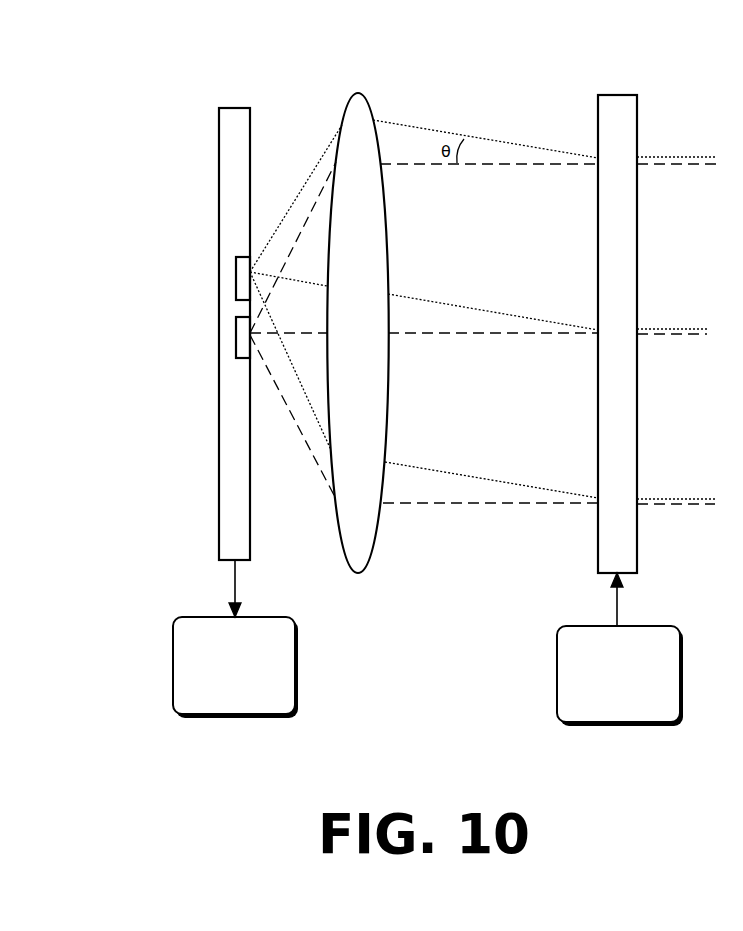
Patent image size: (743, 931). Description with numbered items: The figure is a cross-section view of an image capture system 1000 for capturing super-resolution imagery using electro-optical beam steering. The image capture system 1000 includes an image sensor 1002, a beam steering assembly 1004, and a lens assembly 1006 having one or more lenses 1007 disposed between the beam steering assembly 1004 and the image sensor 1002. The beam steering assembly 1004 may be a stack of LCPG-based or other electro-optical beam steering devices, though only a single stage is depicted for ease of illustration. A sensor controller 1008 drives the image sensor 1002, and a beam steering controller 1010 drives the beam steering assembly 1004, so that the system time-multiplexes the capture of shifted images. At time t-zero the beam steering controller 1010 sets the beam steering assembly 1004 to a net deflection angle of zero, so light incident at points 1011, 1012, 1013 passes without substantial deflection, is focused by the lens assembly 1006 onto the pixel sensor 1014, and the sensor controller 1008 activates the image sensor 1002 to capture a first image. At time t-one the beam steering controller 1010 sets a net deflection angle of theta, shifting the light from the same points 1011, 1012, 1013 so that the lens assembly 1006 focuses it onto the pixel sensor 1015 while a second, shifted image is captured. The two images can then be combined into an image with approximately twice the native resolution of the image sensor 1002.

The image capture system 1000 is at (540, 106).
The image sensor 1002 is at (235, 107).
The beam steering assembly 1004 is at (620, 89).
The lens assembly 1006 is at (376, 88).
The lens 1007 is at (377, 342).
The sensor controller 1008 is at (216, 699).
The beam steering controller 1010 is at (600, 714).
The point 1011 is at (640, 157).
The point 1012 is at (640, 329).
The point 1013 is at (640, 499).
The pixel sensor 1014 is at (236, 354).
The pixel sensor 1015 is at (236, 273).